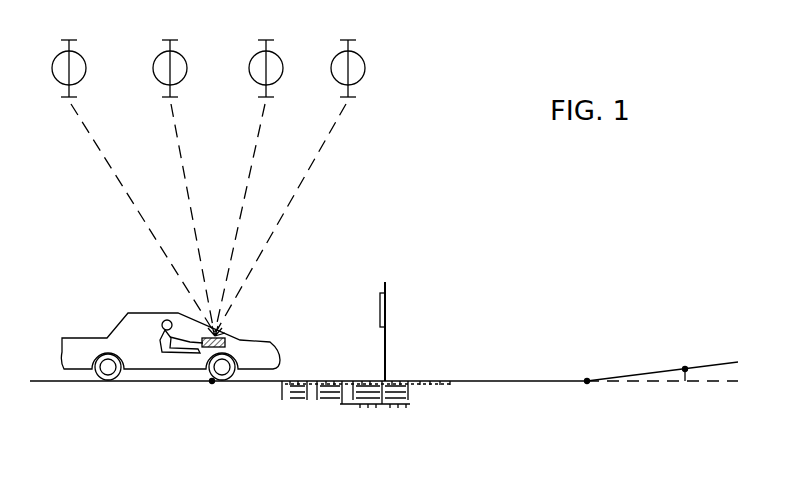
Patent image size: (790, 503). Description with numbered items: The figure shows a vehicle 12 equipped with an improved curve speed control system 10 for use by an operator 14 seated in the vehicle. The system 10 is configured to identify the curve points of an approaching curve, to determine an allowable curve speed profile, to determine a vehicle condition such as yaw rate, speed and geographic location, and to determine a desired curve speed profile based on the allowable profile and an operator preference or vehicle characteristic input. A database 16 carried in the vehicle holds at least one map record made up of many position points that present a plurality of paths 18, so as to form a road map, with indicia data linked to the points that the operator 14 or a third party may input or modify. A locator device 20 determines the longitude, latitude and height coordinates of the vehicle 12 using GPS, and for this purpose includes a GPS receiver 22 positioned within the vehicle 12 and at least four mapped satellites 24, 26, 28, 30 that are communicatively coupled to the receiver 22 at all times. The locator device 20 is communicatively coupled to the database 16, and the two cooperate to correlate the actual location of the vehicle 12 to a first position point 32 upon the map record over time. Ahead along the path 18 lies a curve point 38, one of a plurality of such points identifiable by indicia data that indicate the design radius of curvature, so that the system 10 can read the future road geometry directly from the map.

The curve speed control system 10 is at (354, 262).
The vehicle 12 is at (105, 337).
The operator 14 is at (155, 323).
The database 16 is at (226, 342).
The paths 18 is at (483, 381).
The locator device 20 is at (80, 175).
The GPS receiver 22 is at (220, 334).
The mapped satellite 24 is at (83, 57).
The mapped satellite 26 is at (184, 57).
The mapped satellite 28 is at (280, 57).
The mapped satellite 30 is at (362, 57).
The first position point 32 is at (212, 383).
The curve point 38 is at (587, 383).